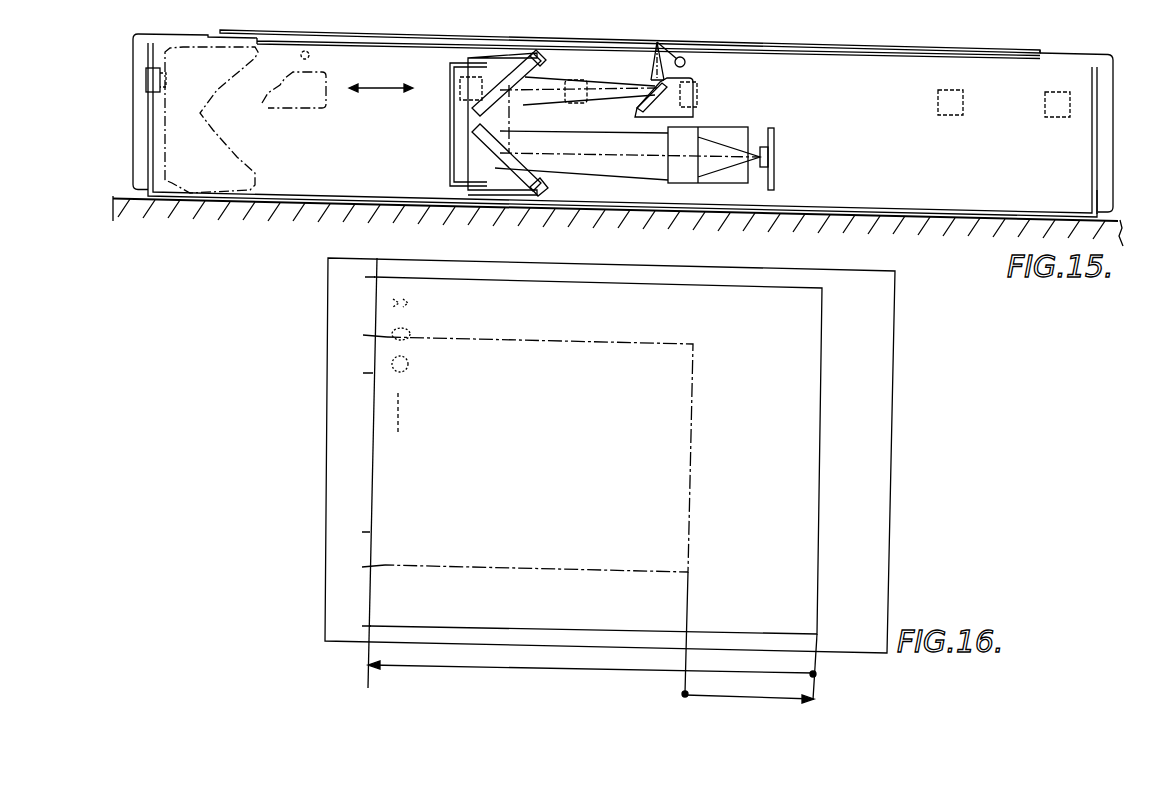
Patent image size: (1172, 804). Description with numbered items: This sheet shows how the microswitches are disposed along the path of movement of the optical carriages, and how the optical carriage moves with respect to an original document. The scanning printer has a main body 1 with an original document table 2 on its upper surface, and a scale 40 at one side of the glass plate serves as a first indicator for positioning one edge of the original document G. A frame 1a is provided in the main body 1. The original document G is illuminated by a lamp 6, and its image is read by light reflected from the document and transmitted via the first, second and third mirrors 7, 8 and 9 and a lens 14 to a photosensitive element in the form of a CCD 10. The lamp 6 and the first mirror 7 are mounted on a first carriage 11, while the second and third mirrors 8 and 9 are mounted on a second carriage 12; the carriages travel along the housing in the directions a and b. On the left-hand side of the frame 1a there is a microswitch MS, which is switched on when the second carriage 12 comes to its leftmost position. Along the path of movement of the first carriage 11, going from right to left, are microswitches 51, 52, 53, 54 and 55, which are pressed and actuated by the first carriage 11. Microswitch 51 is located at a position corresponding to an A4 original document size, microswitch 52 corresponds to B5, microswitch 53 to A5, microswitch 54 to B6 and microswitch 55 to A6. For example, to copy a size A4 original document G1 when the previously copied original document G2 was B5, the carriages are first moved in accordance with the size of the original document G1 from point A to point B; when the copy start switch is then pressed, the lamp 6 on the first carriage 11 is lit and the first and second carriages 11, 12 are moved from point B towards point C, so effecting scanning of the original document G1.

In FIG. 15, the main body 1 is at (1080, 58).
In FIG. 15, the frame 1a is at (1098, 194).
In FIG. 15, the original document table 2 is at (892, 53).
In FIG. 15, the scale 40 is at (250, 30).
In FIG. 15, the original document G is at (463, 33).
In FIG. 15, the second carriage 12 is at (150, 136).
In FIG. 15, the microswitch MS is at (146, 82).
In FIG. 15, the second mirror 8 is at (227, 95).
In FIG. 15, the third mirror 9 is at (250, 160).
In FIG. 15, the first mirror 7 is at (288, 81).
In FIG. 15, the lamp 6 is at (310, 57).
In FIG. 15, the scan direction b is at (379, 79).
In FIG. 15, the scan direction a is at (407, 81).
In FIG. 15, the microswitch 55 is at (452, 97).
In FIG. 15, the microswitch 54 is at (575, 102).
In FIG. 15, the microswitch 53 is at (702, 90).
In FIG. 15, the first carriage 11 is at (702, 113).
In FIG. 15, the lens 14 is at (680, 182).
In FIG. 15, the CCD 10 is at (774, 178).
In FIG. 15, the microswitch 52 is at (947, 113).
In FIG. 15, the microswitch 51 is at (1060, 115).
In FIG. 16, the size A4 original document G1 is at (822, 335).
In FIG. 16, the previously copied original document G2 is at (572, 338).
In FIG. 16, the A4 original document size A4 is at (358, 449).
In FIG. 16, the A5 original document size A5 is at (374, 464).
In FIG. 16, the B5 original document size B5 is at (375, 452).
In FIG. 16, the B6 original document size B6 is at (369, 467).
In FIG. 16, the A6 original document size A6 is at (374, 449).
In FIG. 16, the point A is at (743, 650).
In FIG. 16, the point B is at (813, 682).
In FIG. 16, the point C is at (584, 682).